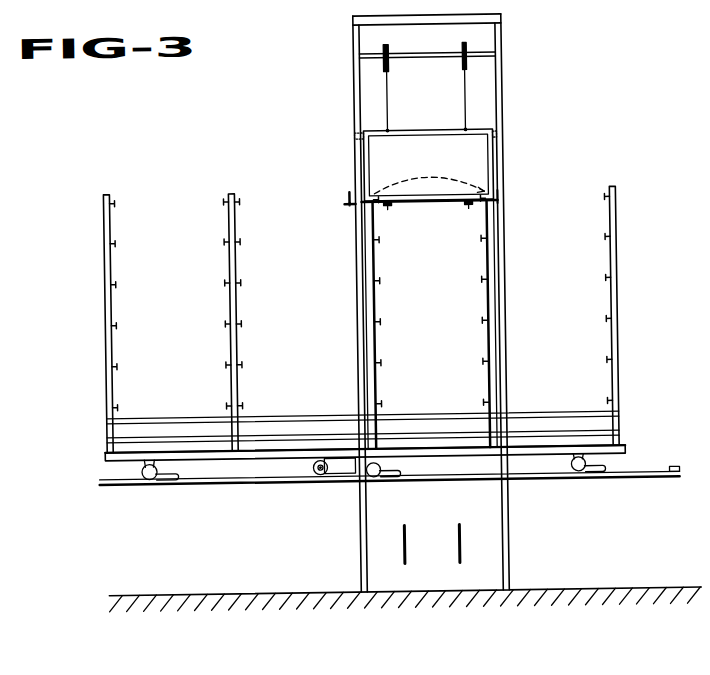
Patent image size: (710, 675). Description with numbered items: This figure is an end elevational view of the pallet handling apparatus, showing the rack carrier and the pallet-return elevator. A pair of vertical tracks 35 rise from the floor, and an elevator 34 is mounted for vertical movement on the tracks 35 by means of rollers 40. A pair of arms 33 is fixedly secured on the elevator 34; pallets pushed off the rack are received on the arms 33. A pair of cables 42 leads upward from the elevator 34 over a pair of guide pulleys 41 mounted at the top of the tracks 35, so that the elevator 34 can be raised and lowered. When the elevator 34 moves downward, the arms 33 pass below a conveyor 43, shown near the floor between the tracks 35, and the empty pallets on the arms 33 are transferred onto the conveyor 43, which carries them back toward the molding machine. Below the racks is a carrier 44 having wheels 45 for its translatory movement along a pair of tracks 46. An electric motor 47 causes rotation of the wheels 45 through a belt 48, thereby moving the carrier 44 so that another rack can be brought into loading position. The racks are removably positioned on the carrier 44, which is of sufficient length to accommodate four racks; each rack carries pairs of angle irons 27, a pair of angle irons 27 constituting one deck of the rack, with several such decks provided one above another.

The angle irons 27 is at (117, 322).
The arms 33 is at (389, 205).
The elevator 34 is at (371, 157).
The tracks 35 is at (357, 69).
The rollers 40 is at (358, 137).
The guide pulleys 41 is at (466, 45).
The cables 42 is at (467, 86).
The conveyor 43 is at (455, 540).
The carrier 44 is at (103, 452).
The wheels 45 is at (157, 479).
The tracks 46 is at (273, 481).
The electric motor 47 is at (314, 476).
The belt 48 is at (346, 476).